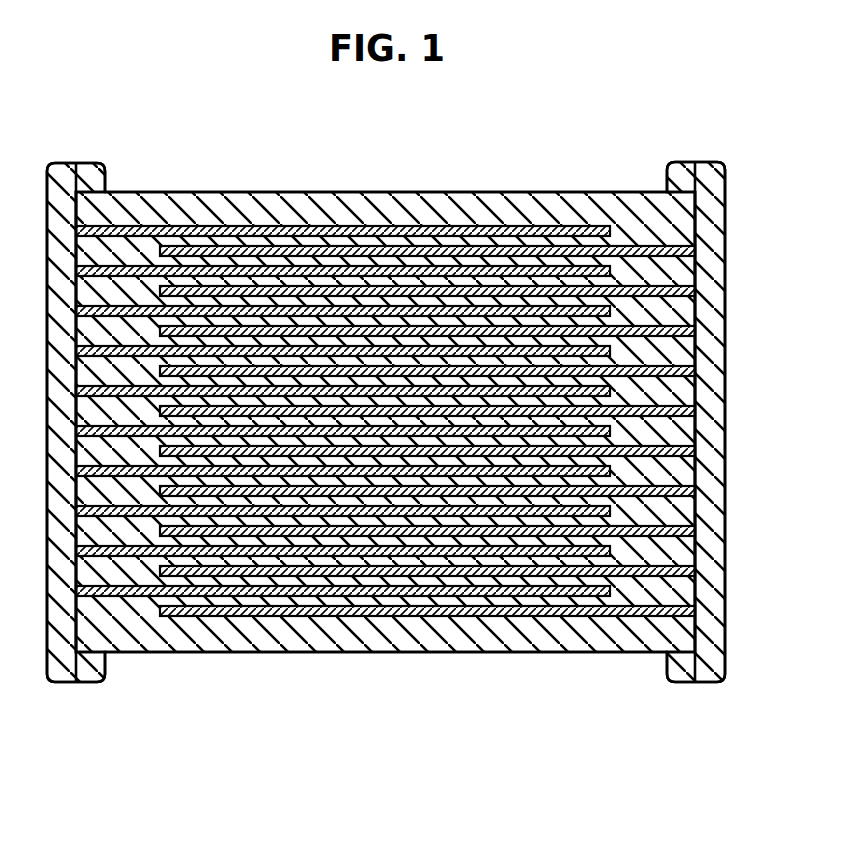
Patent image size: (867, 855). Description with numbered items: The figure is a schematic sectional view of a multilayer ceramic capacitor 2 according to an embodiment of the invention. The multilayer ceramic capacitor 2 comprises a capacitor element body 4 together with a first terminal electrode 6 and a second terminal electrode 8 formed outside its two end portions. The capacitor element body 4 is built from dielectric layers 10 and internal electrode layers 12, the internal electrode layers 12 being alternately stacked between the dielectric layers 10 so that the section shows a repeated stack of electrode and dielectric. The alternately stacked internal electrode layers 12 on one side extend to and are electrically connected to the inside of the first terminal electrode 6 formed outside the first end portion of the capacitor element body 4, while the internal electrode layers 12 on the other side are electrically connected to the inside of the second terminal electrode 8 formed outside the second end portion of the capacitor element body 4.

The multilayer ceramic capacitor 2 is at (247, 692).
The capacitor element body 4 is at (540, 654).
The first terminal electrode 6 is at (76, 676).
The second terminal electrode 8 is at (693, 172).
The dielectric layer 10 is at (325, 232).
The internal electrode layer 12 is at (473, 236).